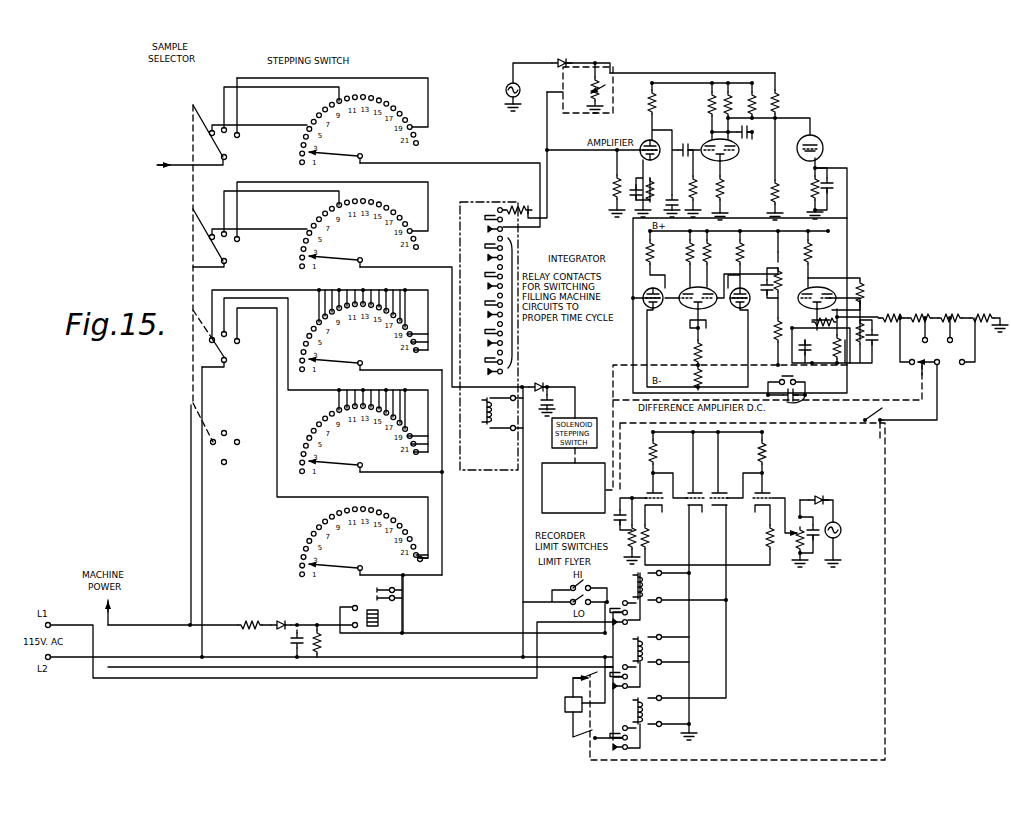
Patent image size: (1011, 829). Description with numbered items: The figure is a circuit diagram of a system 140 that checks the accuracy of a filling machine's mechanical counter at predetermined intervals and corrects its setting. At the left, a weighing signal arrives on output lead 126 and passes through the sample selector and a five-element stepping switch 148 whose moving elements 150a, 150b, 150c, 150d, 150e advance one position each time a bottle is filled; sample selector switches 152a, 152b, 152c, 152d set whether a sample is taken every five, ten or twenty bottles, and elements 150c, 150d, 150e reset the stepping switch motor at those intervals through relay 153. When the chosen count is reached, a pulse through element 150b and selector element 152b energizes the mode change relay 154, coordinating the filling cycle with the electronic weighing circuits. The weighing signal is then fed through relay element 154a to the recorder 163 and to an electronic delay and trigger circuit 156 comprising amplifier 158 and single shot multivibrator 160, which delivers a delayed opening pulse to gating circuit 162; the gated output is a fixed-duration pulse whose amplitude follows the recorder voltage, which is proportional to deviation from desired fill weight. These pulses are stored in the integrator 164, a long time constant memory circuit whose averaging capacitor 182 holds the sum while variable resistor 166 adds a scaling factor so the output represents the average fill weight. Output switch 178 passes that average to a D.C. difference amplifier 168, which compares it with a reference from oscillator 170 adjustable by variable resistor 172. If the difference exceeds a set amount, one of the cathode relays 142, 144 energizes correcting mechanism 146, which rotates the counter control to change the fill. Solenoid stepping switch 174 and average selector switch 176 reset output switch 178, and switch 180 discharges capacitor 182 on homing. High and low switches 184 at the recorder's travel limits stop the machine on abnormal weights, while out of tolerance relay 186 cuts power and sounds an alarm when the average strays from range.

The output lead 126 is at (157, 165).
The system 140 is at (856, 168).
The cathode relay 142 is at (658, 653).
The cathode relay 144 is at (660, 714).
The correcting mechanism 146 is at (565, 704).
The stepping switch 148 is at (410, 70).
The moving element of stepping switch 150a is at (337, 147).
The moving element of stepping switch 150b is at (337, 251).
The moving element of stepping switch 150c is at (337, 354).
The moving element of stepping switch 150d is at (337, 456).
The moving element of stepping switch 150e is at (337, 559).
The sample selector switch 152a is at (217, 138).
The sample selector switch 152b is at (217, 242).
The sample selector switch 152c is at (217, 338).
The sample selector switch 152d is at (217, 442).
The relay 153 is at (384, 622).
The mode change relay 154 is at (466, 473).
The relay element 154a is at (470, 214).
The electronic delay and trigger circuit 156 is at (688, 95).
The amplifier 158 is at (613, 174).
The single shot multivibrator 160 is at (724, 201).
The gating circuit 162 is at (823, 140).
The recorder 163 is at (578, 64).
The integrator 164 is at (840, 267).
The variable resistor 166 is at (945, 357).
The D.C. difference amplifier 168 is at (785, 493).
The oscillator 170 is at (833, 545).
The variable resistor 172 is at (787, 539).
The solenoid stepping switch 174 is at (578, 385).
The average selector switch 176 is at (563, 517).
The output switch 178 is at (872, 415).
The switch 180 is at (806, 382).
The averaging capacitor 182 is at (790, 420).
The high and low switches 184 is at (551, 590).
The out of tolerance relay 186 is at (651, 589).